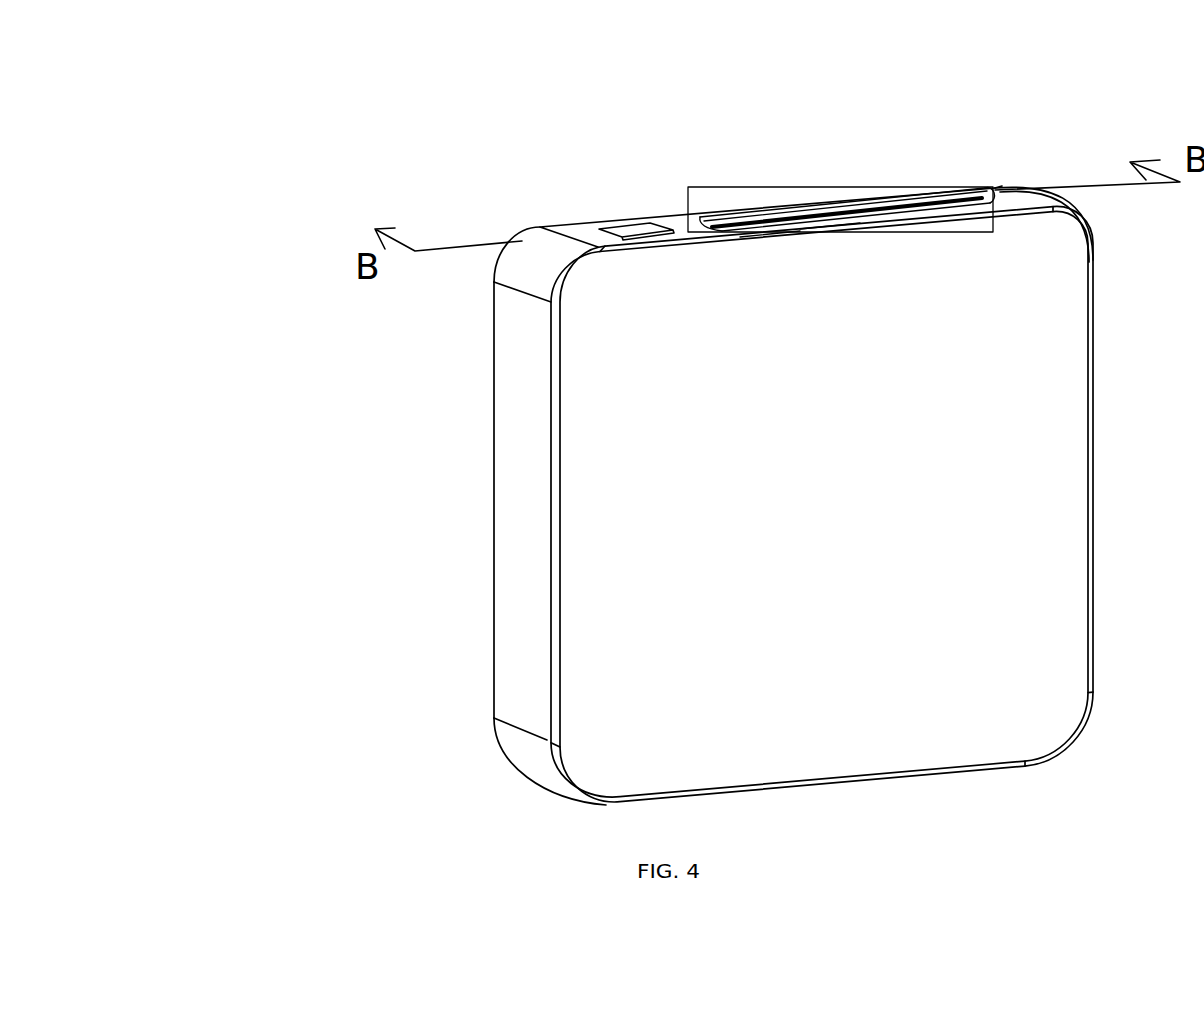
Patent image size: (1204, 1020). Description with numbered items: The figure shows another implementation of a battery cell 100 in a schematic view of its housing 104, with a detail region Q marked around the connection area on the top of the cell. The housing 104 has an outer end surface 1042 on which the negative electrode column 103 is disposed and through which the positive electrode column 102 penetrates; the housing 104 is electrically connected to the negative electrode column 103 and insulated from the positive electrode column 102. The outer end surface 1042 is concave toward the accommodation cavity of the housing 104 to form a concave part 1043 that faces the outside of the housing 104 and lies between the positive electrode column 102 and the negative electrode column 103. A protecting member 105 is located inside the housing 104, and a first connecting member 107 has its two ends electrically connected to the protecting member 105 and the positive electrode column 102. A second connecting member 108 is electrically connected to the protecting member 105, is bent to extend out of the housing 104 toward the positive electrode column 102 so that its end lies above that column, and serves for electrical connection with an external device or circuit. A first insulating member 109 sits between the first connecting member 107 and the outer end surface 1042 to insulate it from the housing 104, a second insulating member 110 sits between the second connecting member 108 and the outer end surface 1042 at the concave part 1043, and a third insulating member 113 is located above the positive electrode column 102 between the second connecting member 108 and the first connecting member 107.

The battery cell 100 is at (212, 73).
The positive electrode column 102 is at (995, 189).
The negative electrode column 103 is at (630, 229).
The housing 104 is at (537, 495).
The protecting member 105 is at (763, 233).
The first connecting member 107 is at (953, 213).
The second connecting member 108 is at (842, 212).
The first insulating member 109 is at (940, 212).
The second insulating member 110 is at (716, 230).
The third insulating member 113 is at (821, 228).
The outer end surface 1042 is at (571, 232).
The concave part 1043 is at (702, 221).
The detail region Q is at (886, 236).